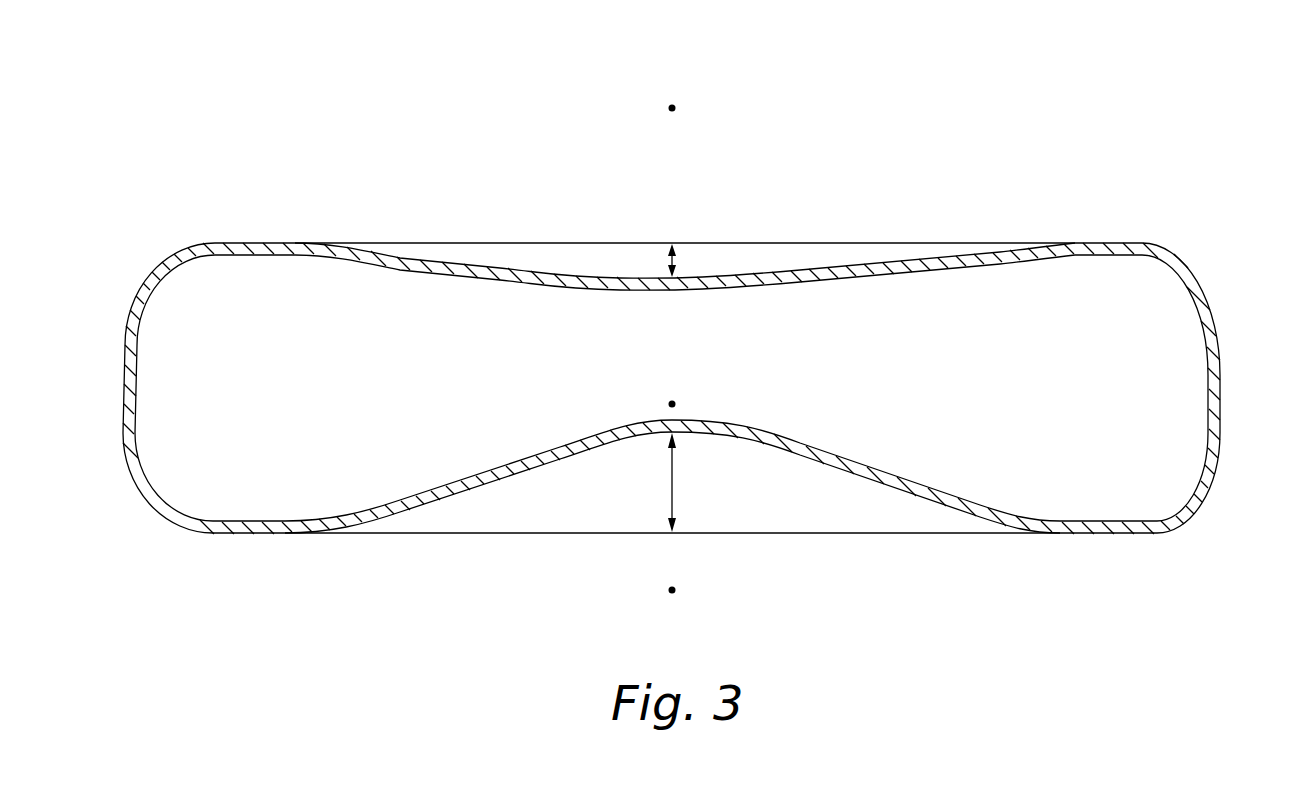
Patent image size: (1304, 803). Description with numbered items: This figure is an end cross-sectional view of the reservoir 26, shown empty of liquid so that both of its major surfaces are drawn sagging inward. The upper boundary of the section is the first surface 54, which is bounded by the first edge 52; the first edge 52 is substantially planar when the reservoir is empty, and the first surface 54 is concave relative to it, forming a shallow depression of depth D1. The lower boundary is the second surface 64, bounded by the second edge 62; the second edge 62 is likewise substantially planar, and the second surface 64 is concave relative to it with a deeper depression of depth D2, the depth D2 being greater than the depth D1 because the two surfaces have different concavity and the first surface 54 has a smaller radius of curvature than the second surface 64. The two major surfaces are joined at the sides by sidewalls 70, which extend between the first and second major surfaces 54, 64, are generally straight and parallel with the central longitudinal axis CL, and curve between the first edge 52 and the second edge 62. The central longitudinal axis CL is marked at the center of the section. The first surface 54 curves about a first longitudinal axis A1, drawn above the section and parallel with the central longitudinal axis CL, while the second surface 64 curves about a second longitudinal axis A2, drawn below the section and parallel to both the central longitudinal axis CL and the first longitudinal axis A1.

The reservoir 26 is at (995, 111).
The first edge 52 is at (212, 243).
The first surface 54 is at (532, 272).
The second edge 62 is at (218, 533).
The second surface 64 is at (495, 481).
The sidewalls 70 is at (124, 360).
The first longitudinal axis A1 is at (678, 108).
The second longitudinal axis A2 is at (666, 590).
The central longitudinal axis CL is at (678, 404).
The depth D1 is at (678, 262).
The depth D2 is at (675, 490).